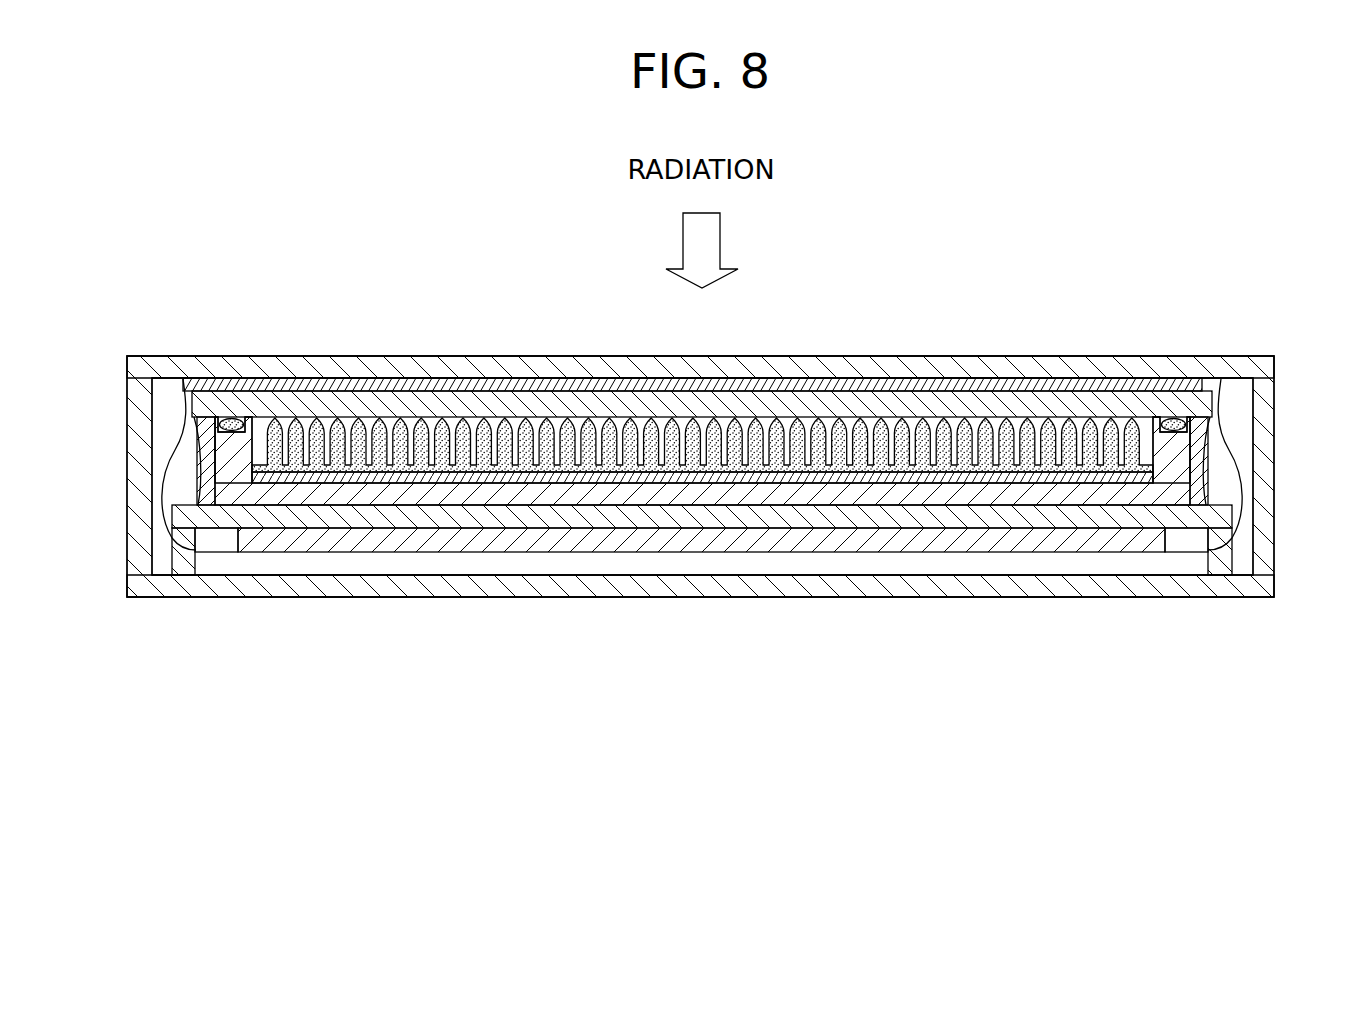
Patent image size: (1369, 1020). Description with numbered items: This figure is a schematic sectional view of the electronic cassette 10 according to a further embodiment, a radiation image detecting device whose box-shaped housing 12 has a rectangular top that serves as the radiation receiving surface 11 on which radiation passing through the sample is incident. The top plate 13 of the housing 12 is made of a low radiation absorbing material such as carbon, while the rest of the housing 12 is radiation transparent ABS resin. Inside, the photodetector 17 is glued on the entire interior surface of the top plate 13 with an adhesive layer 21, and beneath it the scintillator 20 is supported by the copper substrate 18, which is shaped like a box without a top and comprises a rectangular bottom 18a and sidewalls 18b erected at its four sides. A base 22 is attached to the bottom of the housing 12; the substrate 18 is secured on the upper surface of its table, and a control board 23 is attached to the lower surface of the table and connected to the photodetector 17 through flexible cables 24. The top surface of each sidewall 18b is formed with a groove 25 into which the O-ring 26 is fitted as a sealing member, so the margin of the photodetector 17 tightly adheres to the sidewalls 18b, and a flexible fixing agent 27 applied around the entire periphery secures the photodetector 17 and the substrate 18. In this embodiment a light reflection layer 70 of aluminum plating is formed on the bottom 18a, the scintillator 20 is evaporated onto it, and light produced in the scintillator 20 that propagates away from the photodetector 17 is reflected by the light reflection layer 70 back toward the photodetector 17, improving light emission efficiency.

The electronic cassette 10 is at (984, 353).
The radiation receiving surface 11 is at (783, 356).
The housing 12 is at (190, 597).
The top plate 13 is at (843, 368).
The photodetector 17 is at (350, 405).
The substrate 18 is at (566, 510).
The bottom 18a is at (728, 495).
The sidewalls 18b is at (203, 465).
The scintillator 20 is at (1068, 450).
The adhesive layer 21 is at (537, 383).
The base 22 is at (446, 517).
The control board 23 is at (386, 541).
The flexible cables 24 is at (172, 509).
The groove 25 is at (192, 439).
The O-ring 26 is at (234, 419).
The flexible fixing agent 27 is at (182, 393).
The light reflection layer 70 is at (838, 483).